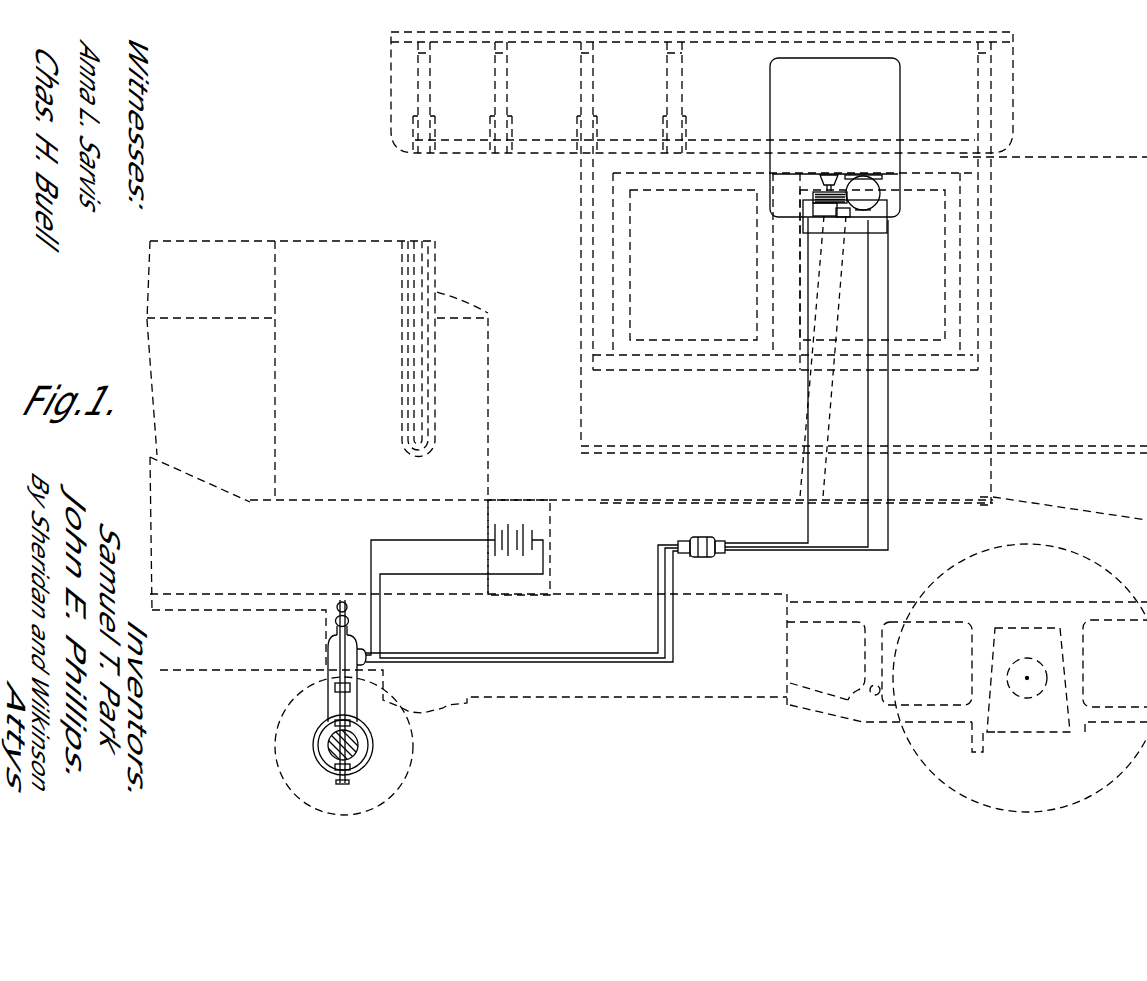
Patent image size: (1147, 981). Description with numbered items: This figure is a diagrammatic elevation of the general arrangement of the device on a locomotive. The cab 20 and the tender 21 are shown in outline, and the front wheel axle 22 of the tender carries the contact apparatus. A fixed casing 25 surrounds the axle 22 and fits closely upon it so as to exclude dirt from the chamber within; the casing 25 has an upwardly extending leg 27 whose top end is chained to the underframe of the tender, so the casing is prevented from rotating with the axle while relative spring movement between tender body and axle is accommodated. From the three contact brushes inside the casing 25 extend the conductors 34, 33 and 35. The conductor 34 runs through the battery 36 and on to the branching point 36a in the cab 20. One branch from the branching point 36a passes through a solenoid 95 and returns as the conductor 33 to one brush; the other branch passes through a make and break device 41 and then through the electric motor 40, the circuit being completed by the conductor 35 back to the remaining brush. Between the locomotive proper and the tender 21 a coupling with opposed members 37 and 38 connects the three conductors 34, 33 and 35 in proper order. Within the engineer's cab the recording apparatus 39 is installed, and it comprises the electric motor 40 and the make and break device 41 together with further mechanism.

The cab 20 is at (787, 265).
The tender 21 is at (372, 349).
The front wheel axle 22 is at (316, 747).
The casing 25 is at (377, 741).
The leg 27 is at (328, 698).
The conductor 33 is at (866, 478).
The conductor 34 is at (805, 474).
The conductor 35 is at (890, 475).
The battery 36 is at (458, 577).
The branching point 36a is at (805, 215).
The coupling member 37 is at (695, 556).
The coupling member 38 is at (718, 557).
The recording apparatus 39 is at (900, 210).
The electric motor 40 is at (858, 188).
The make and break device 41 is at (826, 219).
The solenoid 95 is at (842, 216).